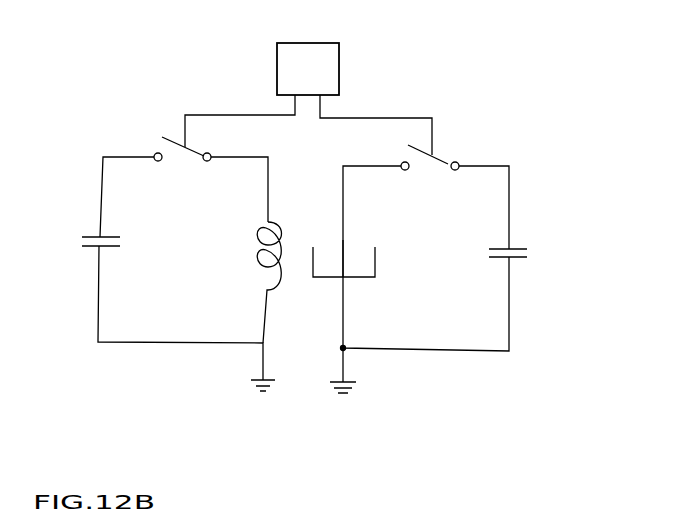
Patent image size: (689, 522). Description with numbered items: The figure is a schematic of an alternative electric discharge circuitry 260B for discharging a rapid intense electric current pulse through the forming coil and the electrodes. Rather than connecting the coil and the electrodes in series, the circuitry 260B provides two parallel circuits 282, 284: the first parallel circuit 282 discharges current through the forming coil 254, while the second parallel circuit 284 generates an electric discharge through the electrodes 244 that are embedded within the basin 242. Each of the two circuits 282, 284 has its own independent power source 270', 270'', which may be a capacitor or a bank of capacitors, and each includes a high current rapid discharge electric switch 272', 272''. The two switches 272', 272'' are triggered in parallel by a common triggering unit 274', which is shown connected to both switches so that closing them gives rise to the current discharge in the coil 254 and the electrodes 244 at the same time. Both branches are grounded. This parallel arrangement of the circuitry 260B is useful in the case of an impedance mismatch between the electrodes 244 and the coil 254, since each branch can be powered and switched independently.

The electric discharge circuitry 260B is at (557, 143).
The triggering unit 274' is at (348, 50).
The electric switch 272' is at (155, 107).
The electric switch 272'' is at (460, 125).
The first parallel circuit 282 is at (130, 298).
The second parallel circuit 284 is at (470, 310).
The power source 270' is at (64, 269).
The power source 270'' is at (555, 235).
The forming coil 254 is at (265, 257).
The electrodes 244 is at (343, 262).
The basin 242 is at (365, 272).